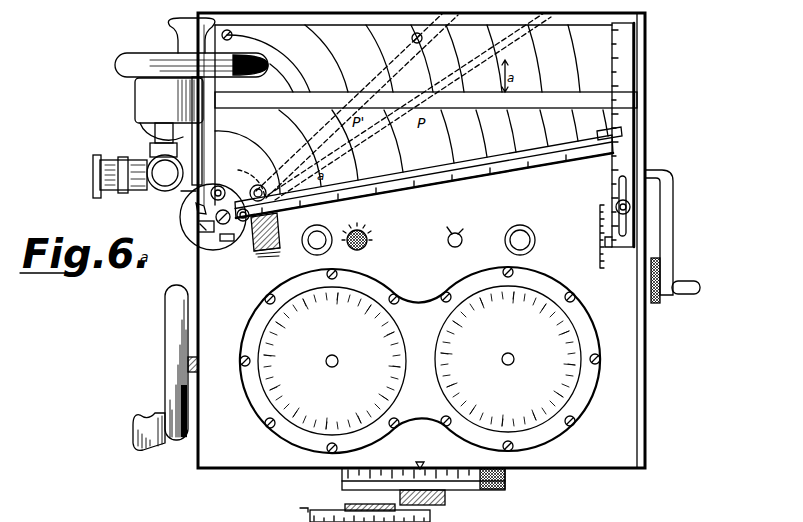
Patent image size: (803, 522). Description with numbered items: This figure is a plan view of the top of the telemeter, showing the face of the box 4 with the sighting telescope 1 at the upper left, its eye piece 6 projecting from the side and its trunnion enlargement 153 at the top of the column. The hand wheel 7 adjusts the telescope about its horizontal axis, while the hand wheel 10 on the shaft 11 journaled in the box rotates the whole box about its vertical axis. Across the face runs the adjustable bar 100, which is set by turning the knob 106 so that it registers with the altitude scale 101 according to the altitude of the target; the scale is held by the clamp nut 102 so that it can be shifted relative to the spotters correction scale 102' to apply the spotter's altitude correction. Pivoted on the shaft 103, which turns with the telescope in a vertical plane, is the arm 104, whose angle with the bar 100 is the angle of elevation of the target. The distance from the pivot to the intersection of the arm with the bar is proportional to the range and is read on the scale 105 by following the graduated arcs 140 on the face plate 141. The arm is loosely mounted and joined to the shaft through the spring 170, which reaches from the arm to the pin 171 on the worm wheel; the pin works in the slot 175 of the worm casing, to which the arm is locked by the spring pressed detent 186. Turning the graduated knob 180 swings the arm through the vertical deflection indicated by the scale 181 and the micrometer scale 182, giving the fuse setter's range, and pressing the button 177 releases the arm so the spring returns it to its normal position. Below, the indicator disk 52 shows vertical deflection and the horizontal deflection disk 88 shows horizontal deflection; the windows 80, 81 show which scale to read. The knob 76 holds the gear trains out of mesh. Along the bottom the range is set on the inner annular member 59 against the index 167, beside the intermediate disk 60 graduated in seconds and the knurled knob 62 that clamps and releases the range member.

The telescope 1 is at (182, 193).
The box 4 is at (646, 386).
The eye piece 6 is at (110, 176).
The hand wheel 7 is at (114, 66).
The hand wheel 10 is at (172, 314).
The shaft 11 is at (199, 364).
The indicator disk 52 is at (332, 361).
The inner annular member 59 is at (506, 478).
The intermediate disk 60 is at (500, 491).
The knurled knob 62 is at (447, 497).
The knob 76 is at (459, 230).
The window 80 is at (312, 247).
The window 81 is at (525, 243).
The horizontal deflection disk 88 is at (508, 359).
The adjustable bar 100 is at (622, 100).
The altitude scale 101 is at (625, 120).
The clamp nut 102 is at (605, 206).
The spotters correction scale 102' is at (608, 240).
The shaft 103 is at (215, 217).
The arm 104 is at (403, 173).
The scale 105 is at (410, 190).
The knob 106 is at (661, 305).
The graduated arcs 140 is at (372, 68).
The face plate 141 is at (322, 58).
The enlargement 153 is at (136, 98).
The index 167 is at (418, 464).
The spring 170 is at (200, 226).
The pin 171 is at (186, 230).
The slot 175 is at (190, 204).
The button 177 is at (259, 185).
The graduated knob 180 is at (266, 258).
The scale 181 is at (229, 243).
The micrometer scale 182 is at (276, 232).
The spring pressed detent 186 is at (220, 187).